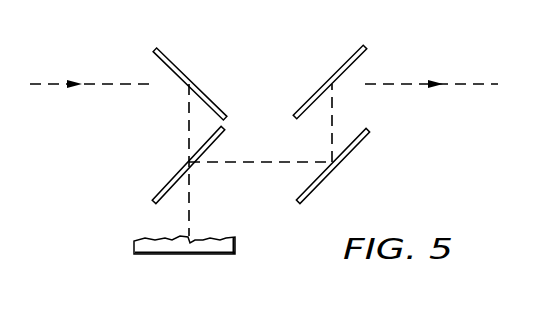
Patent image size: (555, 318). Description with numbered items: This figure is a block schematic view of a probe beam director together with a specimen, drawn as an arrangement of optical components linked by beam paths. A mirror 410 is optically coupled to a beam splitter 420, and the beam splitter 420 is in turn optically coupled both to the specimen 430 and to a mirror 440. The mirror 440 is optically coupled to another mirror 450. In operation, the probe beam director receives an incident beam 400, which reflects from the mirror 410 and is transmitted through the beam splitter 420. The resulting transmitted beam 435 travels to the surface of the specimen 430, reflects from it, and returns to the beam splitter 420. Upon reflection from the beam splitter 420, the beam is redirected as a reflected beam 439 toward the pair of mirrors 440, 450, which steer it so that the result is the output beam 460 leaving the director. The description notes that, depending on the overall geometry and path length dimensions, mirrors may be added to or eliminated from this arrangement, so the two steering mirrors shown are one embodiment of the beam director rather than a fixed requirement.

The incident beam 400 is at (54, 83).
The mirror 410 is at (172, 62).
The beam splitter 420 is at (169, 183).
The specimen 430 is at (134, 248).
The transmitted beam 435 is at (191, 201).
The split beam path 439 is at (252, 160).
The mirror 440 is at (357, 146).
The mirror 450 is at (340, 62).
The output beam 460 is at (460, 83).